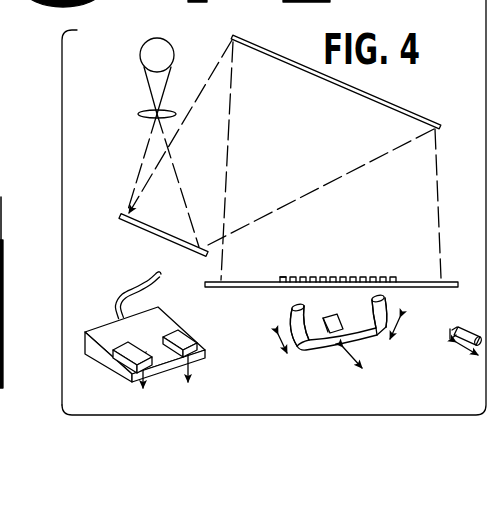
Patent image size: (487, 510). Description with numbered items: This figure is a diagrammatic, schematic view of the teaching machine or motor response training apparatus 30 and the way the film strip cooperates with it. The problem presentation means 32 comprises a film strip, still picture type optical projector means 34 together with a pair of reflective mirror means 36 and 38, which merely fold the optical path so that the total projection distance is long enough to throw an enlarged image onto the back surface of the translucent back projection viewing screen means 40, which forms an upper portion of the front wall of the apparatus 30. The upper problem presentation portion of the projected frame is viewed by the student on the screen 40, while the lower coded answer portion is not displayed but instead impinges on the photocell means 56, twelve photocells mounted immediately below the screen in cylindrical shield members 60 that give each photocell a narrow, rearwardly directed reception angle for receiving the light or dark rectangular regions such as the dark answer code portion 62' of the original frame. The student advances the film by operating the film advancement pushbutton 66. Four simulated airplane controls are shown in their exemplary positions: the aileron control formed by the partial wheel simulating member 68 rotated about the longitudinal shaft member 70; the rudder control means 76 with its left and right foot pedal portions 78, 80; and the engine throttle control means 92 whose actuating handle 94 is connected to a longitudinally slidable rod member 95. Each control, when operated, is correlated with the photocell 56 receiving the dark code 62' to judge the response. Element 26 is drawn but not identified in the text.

The drum 26 is at (72, 12).
The coded answer code portion 62' is at (118, 13).
The teaching machine or motor response training apparatus 30 is at (72, 421).
The problem presentation means 32 is at (206, 298).
The optical projector means 34 is at (128, 128).
The reflective mirror means 36 is at (146, 230).
The reflective mirror means 38 is at (365, 102).
The projection or viewing screen means 40 is at (246, 283).
The photocell means 56 is at (341, 276).
The cylindrical shield members 60 is at (278, 278).
The film advancement pushbutton 66 is at (293, 306).
The partial wheel simulating member 68 is at (370, 342).
The longitudinal shaft member 70 is at (336, 318).
The rudder control means 76 is at (127, 386).
The left foot pedal portion 78 is at (125, 350).
The right foot pedal portion 80 is at (184, 337).
The airplane engine throttle control means 92 is at (467, 325).
The actuating handle 94 is at (470, 351).
The rod member 95 is at (461, 337).